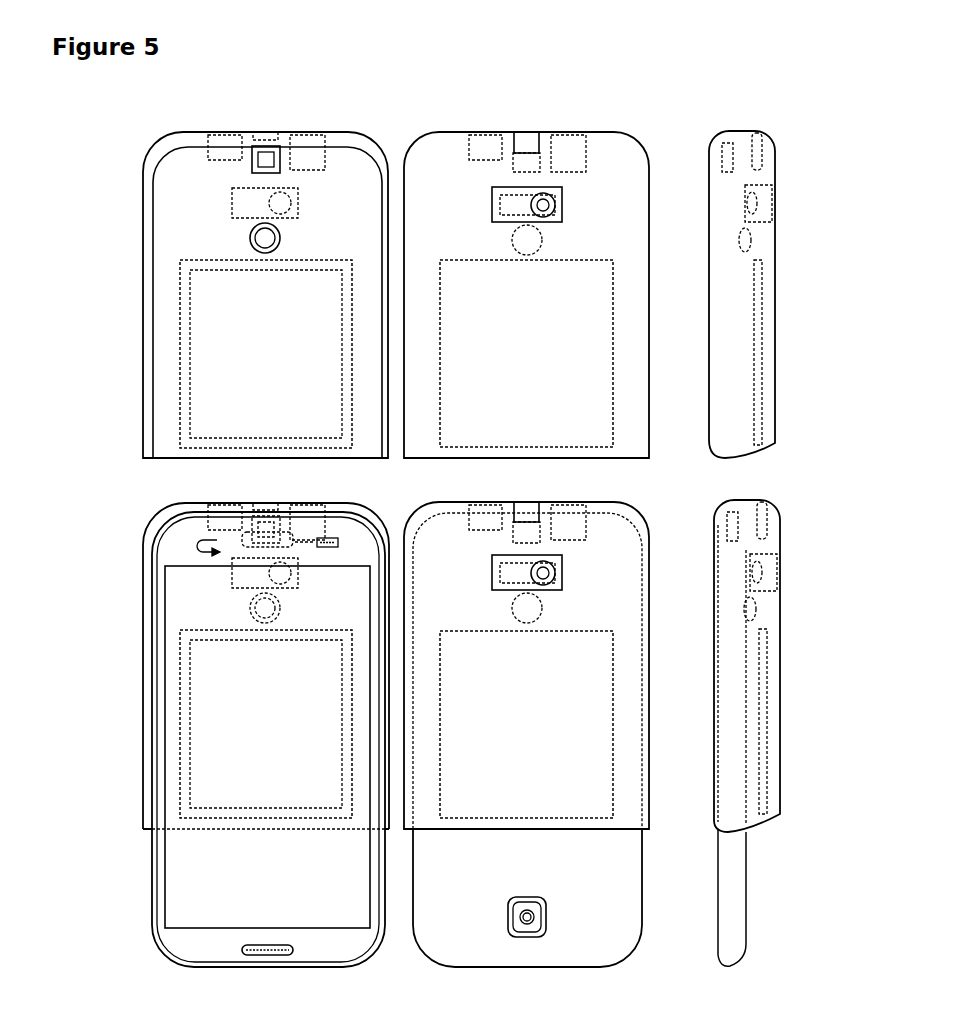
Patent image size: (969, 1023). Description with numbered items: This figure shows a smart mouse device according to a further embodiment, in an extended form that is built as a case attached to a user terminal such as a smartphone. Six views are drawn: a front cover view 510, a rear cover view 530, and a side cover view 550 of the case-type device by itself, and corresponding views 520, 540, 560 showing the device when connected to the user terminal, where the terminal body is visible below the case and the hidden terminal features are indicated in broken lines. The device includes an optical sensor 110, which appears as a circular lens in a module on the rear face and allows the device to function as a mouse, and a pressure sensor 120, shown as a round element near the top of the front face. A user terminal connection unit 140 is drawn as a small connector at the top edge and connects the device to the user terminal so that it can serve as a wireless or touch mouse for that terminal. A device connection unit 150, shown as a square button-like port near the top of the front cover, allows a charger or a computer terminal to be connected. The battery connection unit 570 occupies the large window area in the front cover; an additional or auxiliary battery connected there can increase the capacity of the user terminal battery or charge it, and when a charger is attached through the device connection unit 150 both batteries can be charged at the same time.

The front cover 510 is at (206, 132).
The rear cover 530 is at (620, 138).
The side cover 550 is at (775, 172).
The front of mobile device with cover 520 is at (146, 738).
The rear of mobile device with cover 540 is at (649, 808).
The side of mobile device with cover 560 is at (780, 721).
The user terminal connection unit 140 is at (527, 500).
The optical sensor 110 is at (555, 205).
The device connection unit 150 is at (252, 530).
The pressure sensor 120 is at (250, 609).
The battery connection unit 570 is at (218, 413).